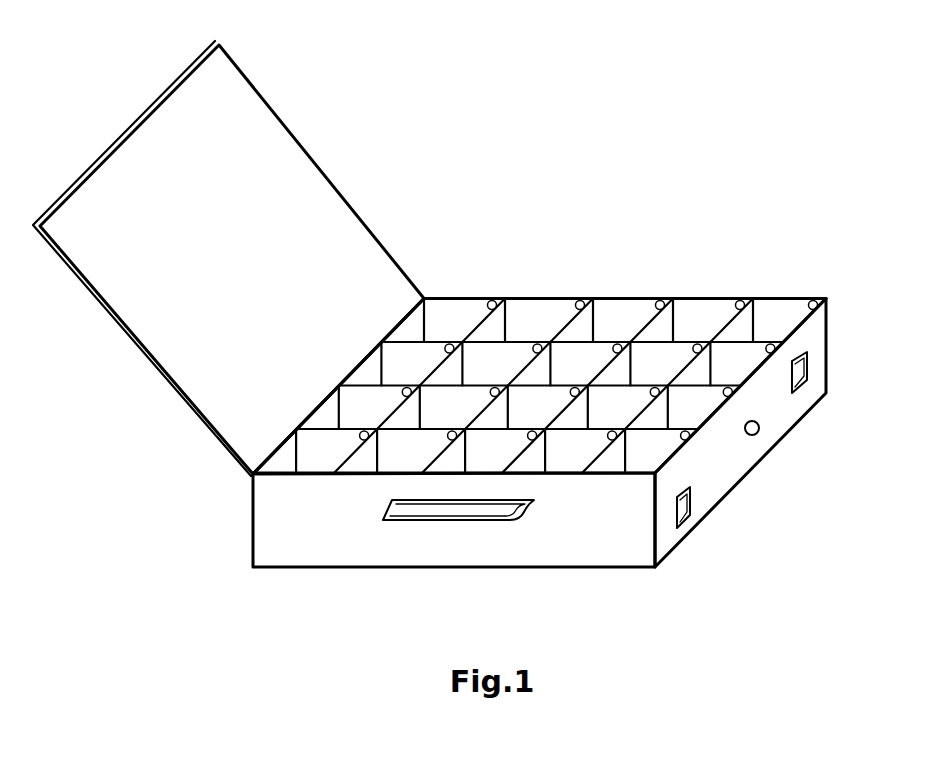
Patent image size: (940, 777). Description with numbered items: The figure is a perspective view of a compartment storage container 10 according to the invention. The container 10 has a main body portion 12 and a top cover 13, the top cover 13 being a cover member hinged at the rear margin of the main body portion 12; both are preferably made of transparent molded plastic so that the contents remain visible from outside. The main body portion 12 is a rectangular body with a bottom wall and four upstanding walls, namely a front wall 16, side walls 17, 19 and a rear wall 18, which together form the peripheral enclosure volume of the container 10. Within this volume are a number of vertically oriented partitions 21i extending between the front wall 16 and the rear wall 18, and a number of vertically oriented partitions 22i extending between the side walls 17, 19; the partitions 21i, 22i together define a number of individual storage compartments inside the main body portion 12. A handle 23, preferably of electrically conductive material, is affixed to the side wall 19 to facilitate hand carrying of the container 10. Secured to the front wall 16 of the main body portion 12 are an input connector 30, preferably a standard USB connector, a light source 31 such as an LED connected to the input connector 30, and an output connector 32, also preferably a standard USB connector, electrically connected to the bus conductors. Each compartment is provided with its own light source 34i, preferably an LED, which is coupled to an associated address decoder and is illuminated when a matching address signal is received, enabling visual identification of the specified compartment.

The compartment storage container 10 is at (545, 284).
The main body portion 12 is at (726, 292).
The top cover 13 is at (298, 167).
The front wall 16 is at (817, 343).
The side wall 17 is at (470, 338).
The rear wall 18 is at (288, 462).
The side wall 19 is at (282, 542).
The partitions 21i is at (728, 330).
The partitions 22i is at (538, 385).
The handle 23 is at (452, 510).
The input connector 30 is at (693, 507).
The light source 31 is at (762, 427).
The output connector 32 is at (805, 372).
The light source 34i is at (407, 388).